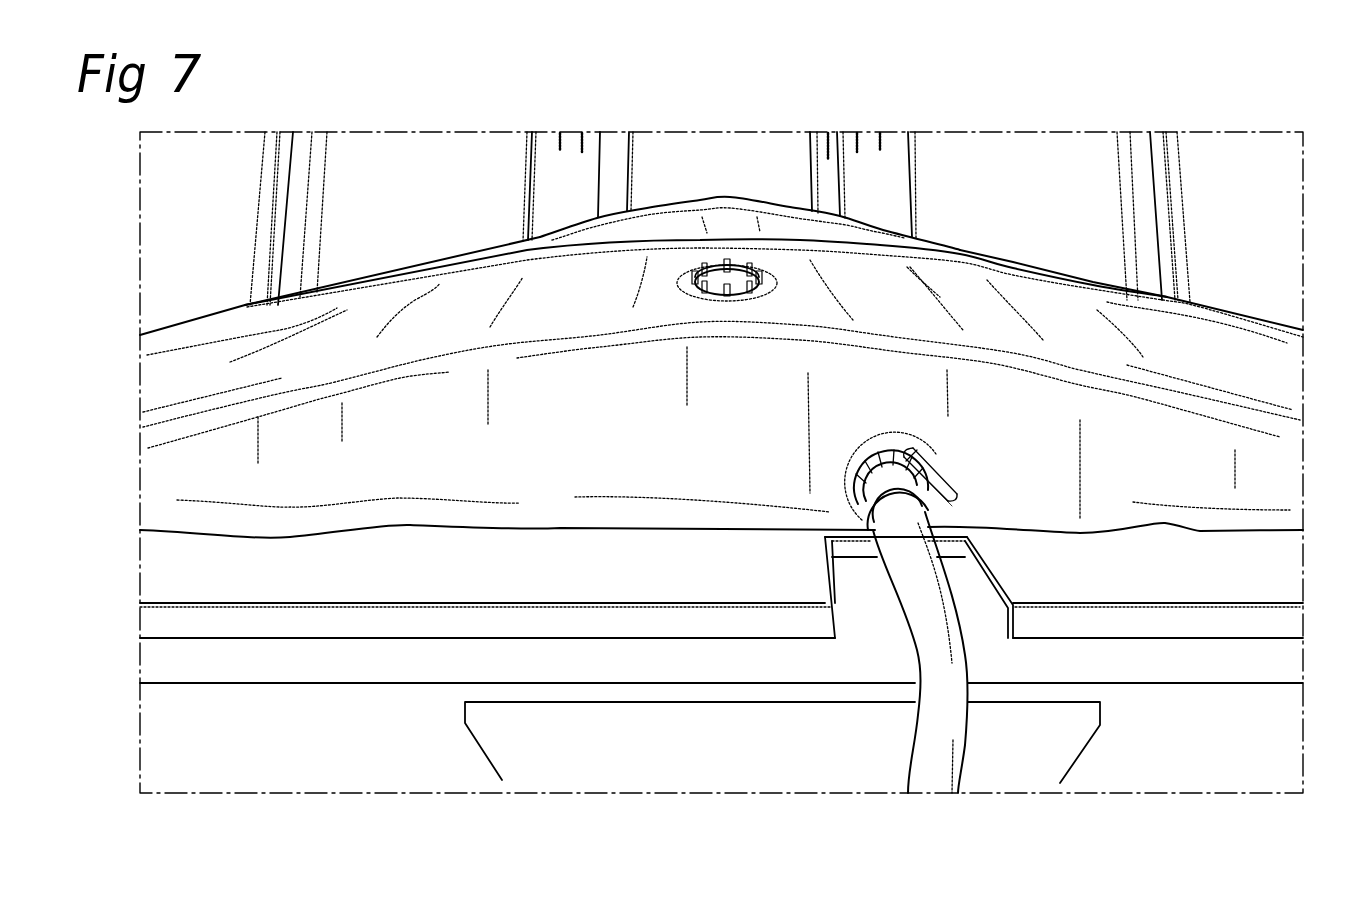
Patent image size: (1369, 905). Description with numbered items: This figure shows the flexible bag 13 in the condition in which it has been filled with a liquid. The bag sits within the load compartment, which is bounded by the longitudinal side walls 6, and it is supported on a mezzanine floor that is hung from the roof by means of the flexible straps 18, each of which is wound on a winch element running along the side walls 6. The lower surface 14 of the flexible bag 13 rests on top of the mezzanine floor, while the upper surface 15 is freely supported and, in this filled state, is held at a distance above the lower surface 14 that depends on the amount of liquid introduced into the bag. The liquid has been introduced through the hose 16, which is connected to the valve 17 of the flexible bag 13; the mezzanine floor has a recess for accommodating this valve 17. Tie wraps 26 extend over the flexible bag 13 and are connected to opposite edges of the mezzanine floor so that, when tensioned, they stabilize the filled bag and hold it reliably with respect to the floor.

The longitudinal side wall 6 is at (360, 167).
The flexible bag 13 is at (1053, 327).
The lower surface 14 is at (1200, 531).
The upper surface 15 is at (1190, 358).
The hose 16 is at (942, 715).
The valve 17 is at (913, 450).
The flexible strap 18 is at (278, 203).
The tie wrap 26 is at (858, 223).